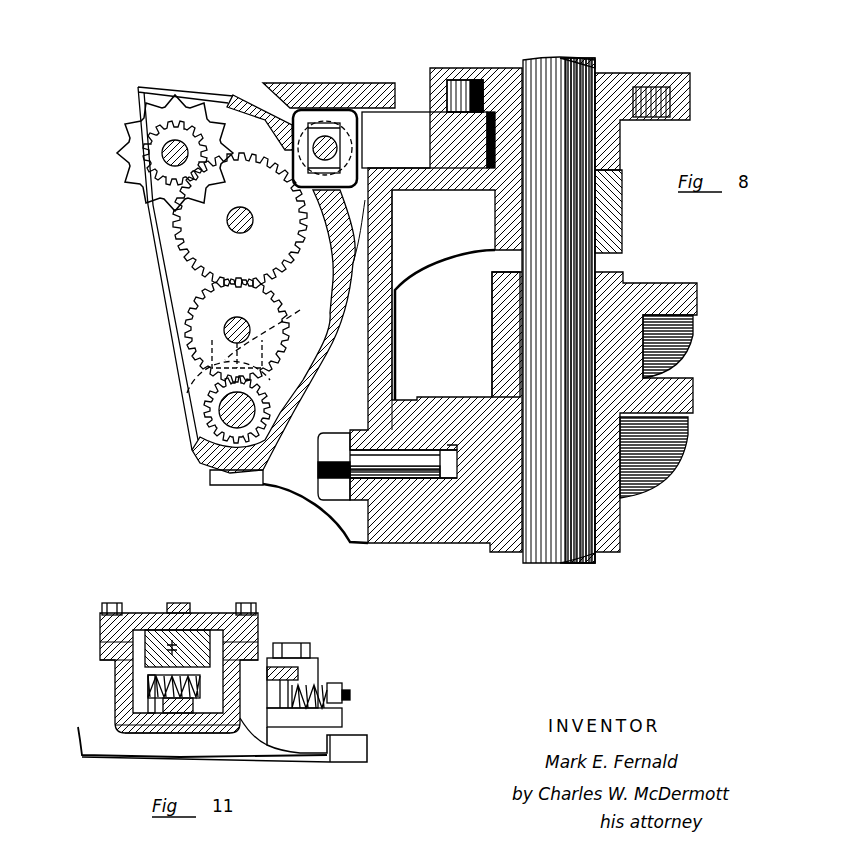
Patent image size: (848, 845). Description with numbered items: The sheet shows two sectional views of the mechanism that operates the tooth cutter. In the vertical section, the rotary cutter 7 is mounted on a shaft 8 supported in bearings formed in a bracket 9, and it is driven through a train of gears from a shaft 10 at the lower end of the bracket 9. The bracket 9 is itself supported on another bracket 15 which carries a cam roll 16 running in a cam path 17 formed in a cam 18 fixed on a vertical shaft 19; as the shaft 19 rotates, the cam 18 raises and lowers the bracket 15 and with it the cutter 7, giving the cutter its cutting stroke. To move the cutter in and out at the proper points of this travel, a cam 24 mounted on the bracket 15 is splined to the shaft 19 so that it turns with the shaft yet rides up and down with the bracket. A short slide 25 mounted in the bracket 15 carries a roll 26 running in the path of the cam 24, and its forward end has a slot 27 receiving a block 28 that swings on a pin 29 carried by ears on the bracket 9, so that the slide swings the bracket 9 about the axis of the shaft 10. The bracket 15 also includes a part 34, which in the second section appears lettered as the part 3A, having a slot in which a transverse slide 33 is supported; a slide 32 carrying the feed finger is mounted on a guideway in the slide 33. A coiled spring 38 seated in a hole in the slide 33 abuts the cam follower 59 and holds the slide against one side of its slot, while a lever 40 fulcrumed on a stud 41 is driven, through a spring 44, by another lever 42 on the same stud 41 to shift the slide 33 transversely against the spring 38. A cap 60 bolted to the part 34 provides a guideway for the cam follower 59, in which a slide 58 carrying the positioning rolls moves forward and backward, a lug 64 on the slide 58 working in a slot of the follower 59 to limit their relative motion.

In FIG. 8, the rotary cutter 7 is at (135, 131).
In FIG. 8, the shaft 8 is at (168, 160).
In FIG. 8, the bracket 9 is at (258, 105).
In FIG. 8, the shaft 10 is at (205, 401).
In FIG. 8, the bracket 15 is at (282, 483).
In FIG. 11, the bracket 15 is at (88, 745).
In FIG. 8, the cam roll 16 is at (420, 537).
In FIG. 8, the cam path 17 is at (664, 358).
In FIG. 8, the cam 18 is at (490, 326).
In FIG. 8, the vertical shaft 19 is at (577, 58).
In FIG. 8, the cam 24 is at (500, 75).
In FIG. 8, the slide 25 is at (415, 118).
In FIG. 8, the roll 26 is at (463, 80).
In FIG. 8, the slot 27 is at (316, 124).
In FIG. 8, the block 28 is at (326, 124).
In FIG. 8, the pin 29 is at (338, 150).
In FIG. 8, the part 34 is at (290, 83).
In FIG. 11, the slide 32 is at (155, 732).
In FIG. 11, the transverse slide 33 is at (210, 728).
In FIG. 11, the cap 3A is at (118, 703).
In FIG. 11, the coiled spring 38 is at (118, 690).
In FIG. 11, the lever 40 is at (305, 670).
In FIG. 11, the stud 41 is at (295, 643).
In FIG. 11, the lever 42 is at (332, 720).
In FIG. 11, the spring 44 is at (344, 690).
In FIG. 11, the slide 58 is at (187, 630).
In FIG. 11, the cam follower 59 is at (118, 666).
In FIG. 11, the cap 60 is at (222, 625).
In FIG. 11, the lug 64 is at (146, 625).